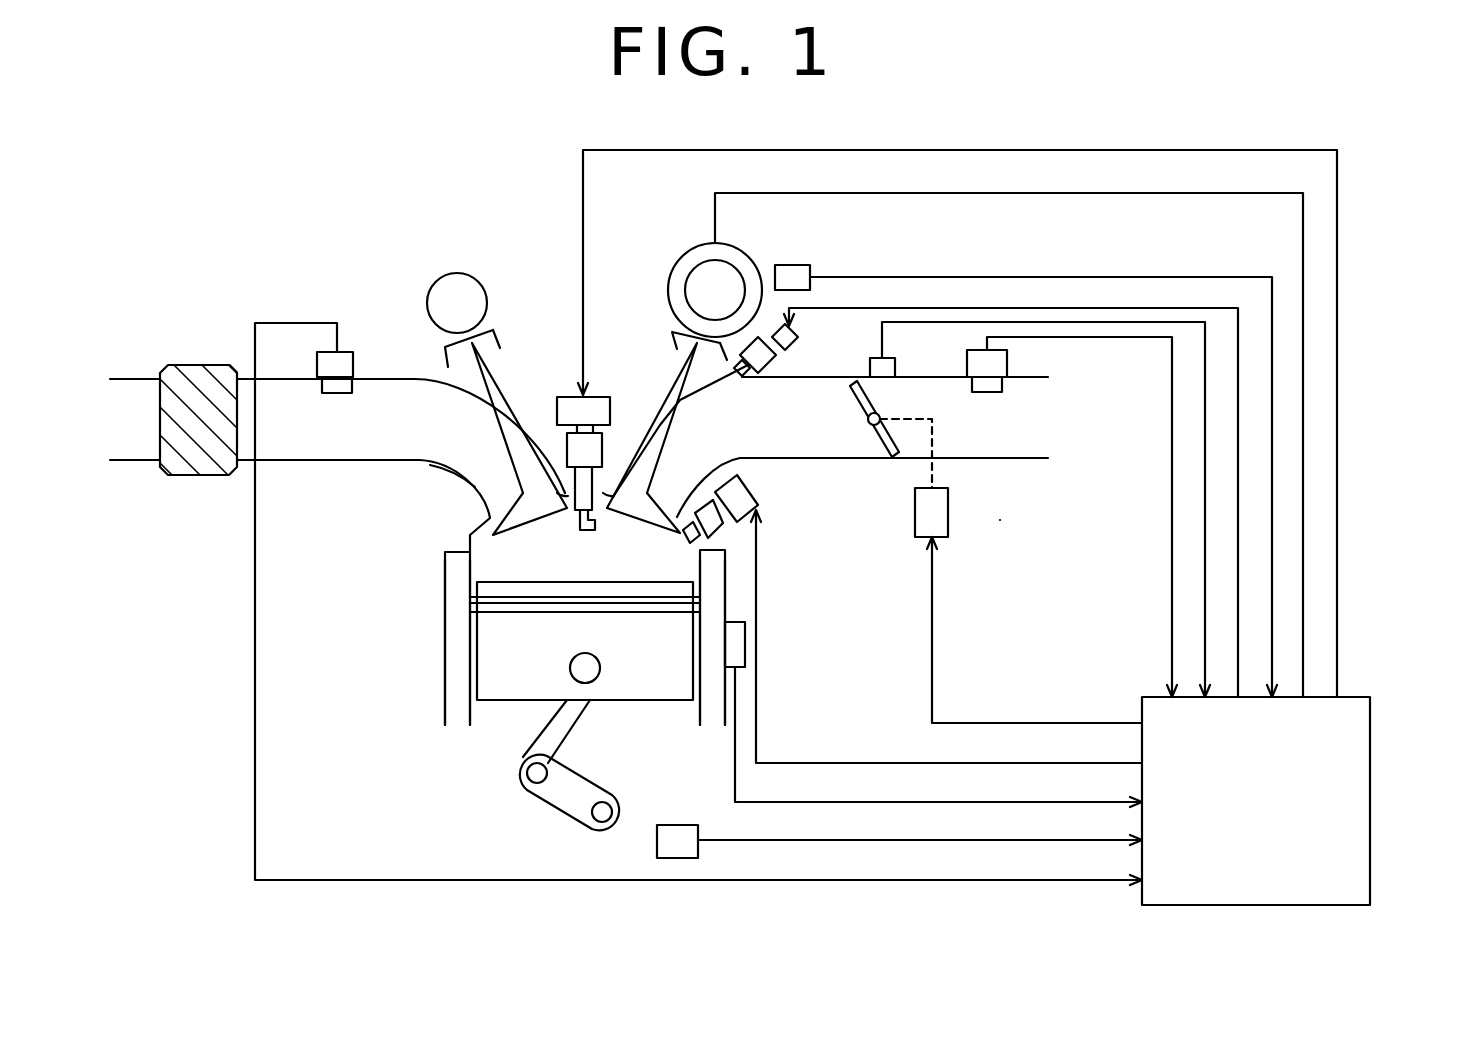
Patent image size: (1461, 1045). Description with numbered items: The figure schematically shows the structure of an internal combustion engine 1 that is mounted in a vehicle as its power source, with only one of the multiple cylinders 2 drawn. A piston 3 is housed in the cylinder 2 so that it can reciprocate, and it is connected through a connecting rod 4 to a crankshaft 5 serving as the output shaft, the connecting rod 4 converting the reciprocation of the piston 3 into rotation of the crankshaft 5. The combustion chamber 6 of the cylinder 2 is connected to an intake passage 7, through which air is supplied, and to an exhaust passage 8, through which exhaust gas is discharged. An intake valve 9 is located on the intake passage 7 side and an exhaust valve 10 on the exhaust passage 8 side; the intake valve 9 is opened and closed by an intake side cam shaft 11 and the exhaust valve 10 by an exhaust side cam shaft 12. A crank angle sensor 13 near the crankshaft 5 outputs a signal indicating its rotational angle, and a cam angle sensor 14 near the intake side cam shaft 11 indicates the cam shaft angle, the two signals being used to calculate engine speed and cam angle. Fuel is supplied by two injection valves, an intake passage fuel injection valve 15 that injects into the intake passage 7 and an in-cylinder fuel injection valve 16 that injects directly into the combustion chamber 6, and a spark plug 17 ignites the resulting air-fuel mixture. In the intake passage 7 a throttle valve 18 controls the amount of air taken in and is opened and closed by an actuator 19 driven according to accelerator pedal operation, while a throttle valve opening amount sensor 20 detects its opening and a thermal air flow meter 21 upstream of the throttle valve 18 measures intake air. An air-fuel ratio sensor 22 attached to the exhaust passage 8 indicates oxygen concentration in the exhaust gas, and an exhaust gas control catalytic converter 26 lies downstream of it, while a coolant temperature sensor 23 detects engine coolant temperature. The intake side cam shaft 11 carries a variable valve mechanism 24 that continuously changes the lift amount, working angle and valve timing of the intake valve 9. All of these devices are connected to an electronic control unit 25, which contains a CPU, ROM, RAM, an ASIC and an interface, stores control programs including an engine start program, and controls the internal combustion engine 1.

The internal combustion engine 1 is at (381, 157).
The cylinder 2 is at (445, 616).
The piston 3 is at (510, 702).
The connecting rod 4 is at (578, 727).
The crankshaft 5 is at (560, 810).
The combustion chamber 6 is at (497, 557).
The intake passage 7 is at (1008, 459).
The exhaust passage 8 is at (325, 462).
The intake valve 9 is at (660, 417).
The exhaust valve 10 is at (468, 478).
The intake side cam shaft 11 is at (686, 292).
The exhaust side cam shaft 12 is at (457, 272).
The crank angle sensor 13 is at (682, 860).
The cam angle sensor 14 is at (790, 265).
The intake passage fuel injection valve 15 is at (798, 345).
The in-cylinder fuel injection valve 16 is at (759, 492).
The spark plug 17 is at (565, 397).
The throttle valve 18 is at (885, 445).
The actuator 19 is at (949, 508).
The throttle valve opening amount sensor 20 is at (896, 370).
The thermal air flow meter 21 is at (1008, 365).
The air-fuel ratio sensor 22 is at (353, 355).
The coolant temperature sensor 23 is at (746, 643).
The variable valve mechanism 24 is at (690, 258).
The electronic control unit 25 is at (1372, 820).
The exhaust gas control catalytic converter 26 is at (207, 477).